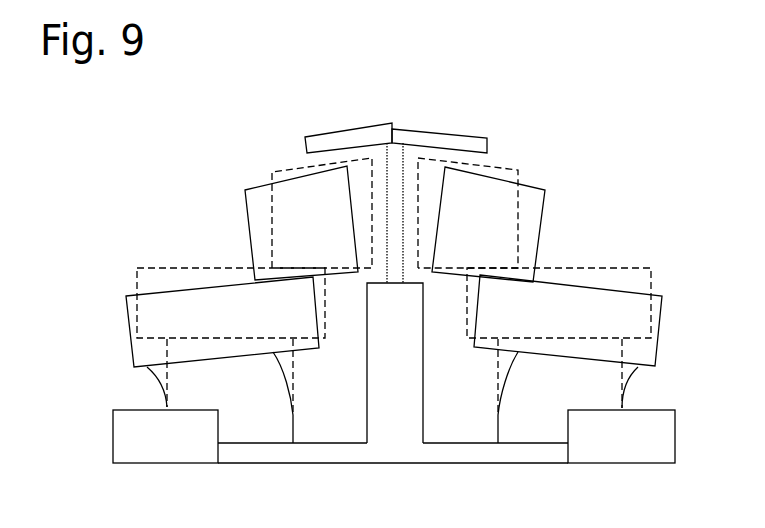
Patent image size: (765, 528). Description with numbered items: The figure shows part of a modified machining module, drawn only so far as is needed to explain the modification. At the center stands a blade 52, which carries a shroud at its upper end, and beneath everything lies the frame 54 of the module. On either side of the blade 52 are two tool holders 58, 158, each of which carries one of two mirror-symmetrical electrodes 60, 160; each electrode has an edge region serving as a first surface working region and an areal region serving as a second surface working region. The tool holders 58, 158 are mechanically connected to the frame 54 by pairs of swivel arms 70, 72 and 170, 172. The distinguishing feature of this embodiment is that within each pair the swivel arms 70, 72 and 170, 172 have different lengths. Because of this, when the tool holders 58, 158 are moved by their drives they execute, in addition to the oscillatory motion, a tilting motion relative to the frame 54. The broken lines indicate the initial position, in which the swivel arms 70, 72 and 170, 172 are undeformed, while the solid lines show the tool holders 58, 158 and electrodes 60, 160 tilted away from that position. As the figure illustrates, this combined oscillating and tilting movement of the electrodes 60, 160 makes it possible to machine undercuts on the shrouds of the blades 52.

The blade 52 is at (393, 163).
The frame 54 is at (413, 457).
The tool holder 58 is at (127, 307).
The electrode 60 is at (246, 203).
The swivel arm 70 is at (157, 387).
The swivel arm 72 is at (276, 365).
The tool holder 158 is at (662, 309).
The electrode 160 is at (545, 201).
The swivel arm 170 is at (635, 373).
The swivel arm 172 is at (518, 373).